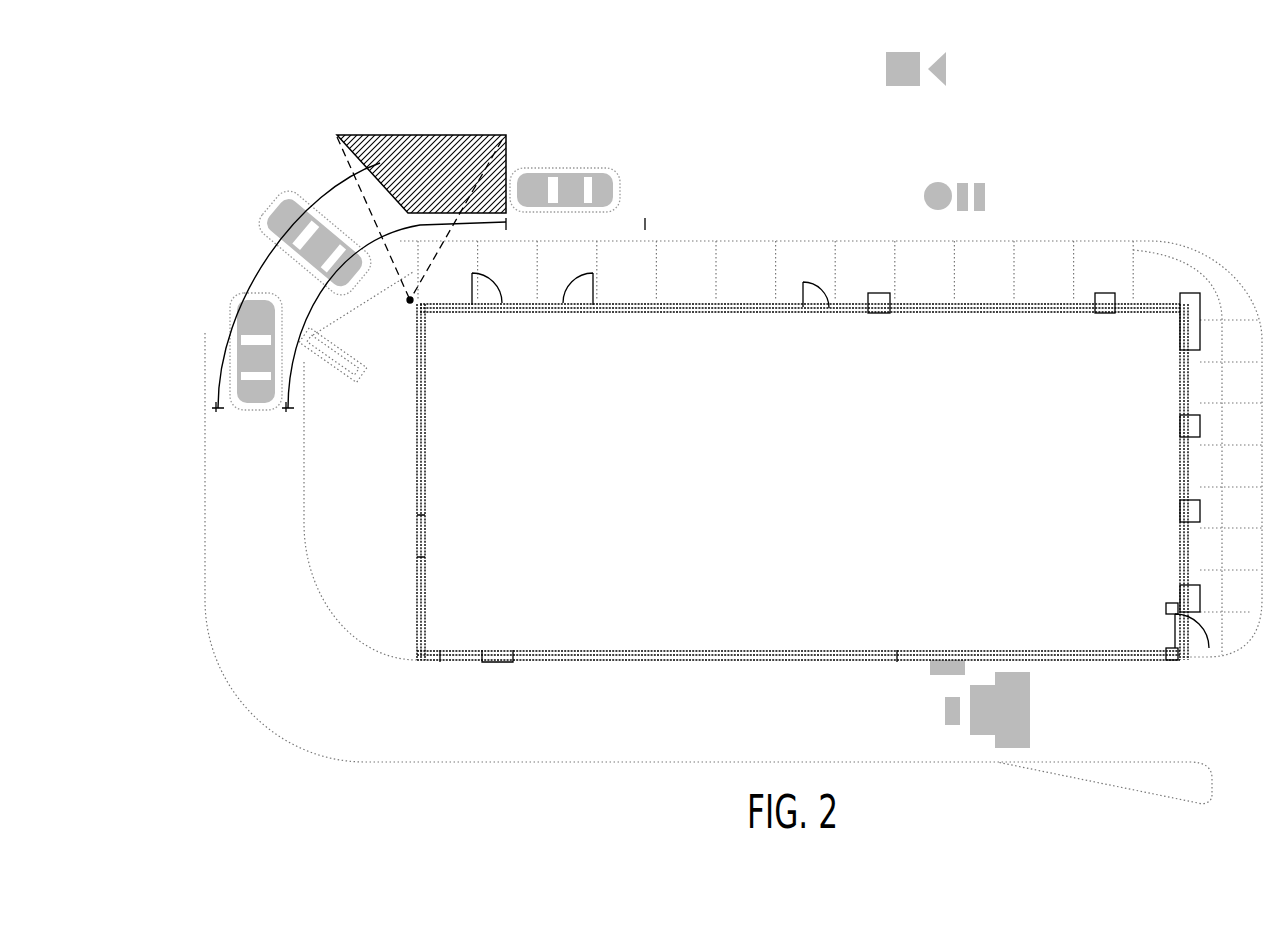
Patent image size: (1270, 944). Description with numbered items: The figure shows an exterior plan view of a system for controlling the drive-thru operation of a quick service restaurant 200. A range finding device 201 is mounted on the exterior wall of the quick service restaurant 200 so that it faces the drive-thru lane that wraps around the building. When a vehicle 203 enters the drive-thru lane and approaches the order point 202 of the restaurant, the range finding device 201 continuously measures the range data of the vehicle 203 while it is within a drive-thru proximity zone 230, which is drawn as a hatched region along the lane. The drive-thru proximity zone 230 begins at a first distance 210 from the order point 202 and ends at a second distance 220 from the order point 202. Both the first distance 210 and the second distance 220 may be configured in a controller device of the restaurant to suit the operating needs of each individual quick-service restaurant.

The quick service restaurant 200 is at (969, 423).
The range finding device 201 is at (398, 299).
The order point 202 is at (204, 408).
The vehicle 203 is at (570, 160).
The first distance 210 is at (516, 223).
The second distance 220 is at (270, 230).
The drive-thru proximity zone 230 is at (420, 126).